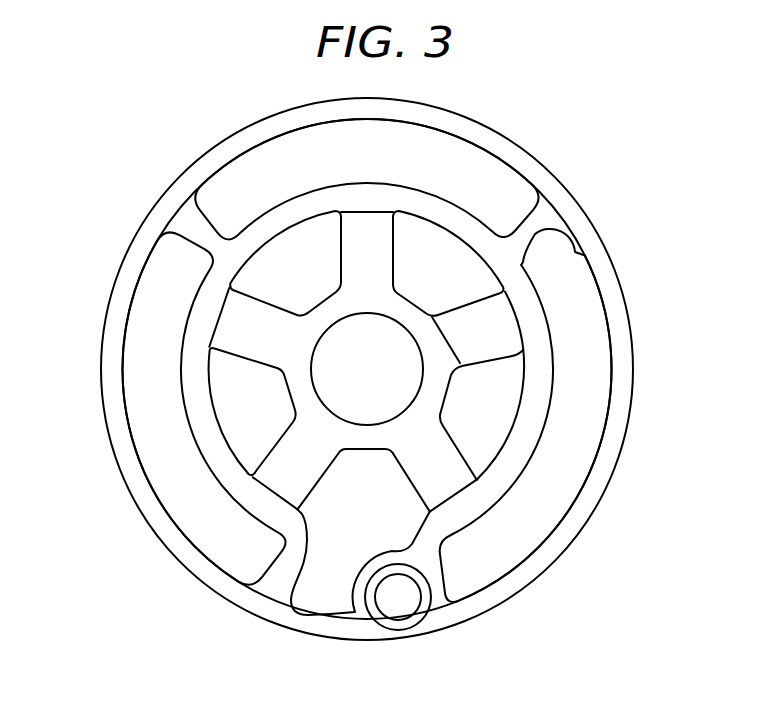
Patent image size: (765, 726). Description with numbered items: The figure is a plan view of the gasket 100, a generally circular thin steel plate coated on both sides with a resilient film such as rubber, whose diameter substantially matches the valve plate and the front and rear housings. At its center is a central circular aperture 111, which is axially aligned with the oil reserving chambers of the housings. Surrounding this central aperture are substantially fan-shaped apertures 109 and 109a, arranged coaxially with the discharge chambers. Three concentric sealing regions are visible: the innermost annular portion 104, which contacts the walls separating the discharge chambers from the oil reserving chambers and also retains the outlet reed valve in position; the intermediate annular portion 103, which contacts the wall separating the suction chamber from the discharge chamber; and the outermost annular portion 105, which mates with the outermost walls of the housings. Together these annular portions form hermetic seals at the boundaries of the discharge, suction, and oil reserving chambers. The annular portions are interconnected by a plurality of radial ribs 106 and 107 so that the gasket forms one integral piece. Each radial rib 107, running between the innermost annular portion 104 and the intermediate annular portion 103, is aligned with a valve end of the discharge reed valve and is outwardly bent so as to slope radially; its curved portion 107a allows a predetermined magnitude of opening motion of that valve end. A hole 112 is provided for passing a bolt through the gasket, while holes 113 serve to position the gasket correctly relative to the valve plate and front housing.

The gasket 100 is at (507, 130).
The intermediate annular portion 103 is at (507, 480).
The innermost annular portion 104 is at (370, 437).
The outermost annular portion 105 is at (548, 186).
The radial rib 106 is at (527, 246).
The radial rib 107 is at (512, 315).
The curved portion 107a is at (487, 343).
The fan-shaped aperture 109 is at (247, 417).
The fan-shaped aperture 109a is at (316, 588).
The central circular aperture 111 is at (410, 386).
The hole 112 is at (407, 597).
The hole 113 is at (267, 178).